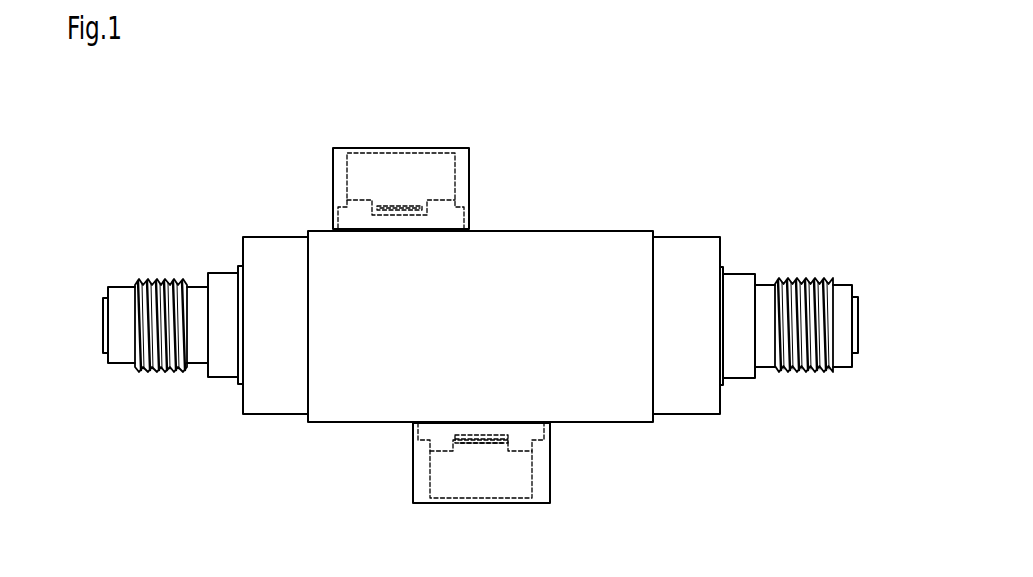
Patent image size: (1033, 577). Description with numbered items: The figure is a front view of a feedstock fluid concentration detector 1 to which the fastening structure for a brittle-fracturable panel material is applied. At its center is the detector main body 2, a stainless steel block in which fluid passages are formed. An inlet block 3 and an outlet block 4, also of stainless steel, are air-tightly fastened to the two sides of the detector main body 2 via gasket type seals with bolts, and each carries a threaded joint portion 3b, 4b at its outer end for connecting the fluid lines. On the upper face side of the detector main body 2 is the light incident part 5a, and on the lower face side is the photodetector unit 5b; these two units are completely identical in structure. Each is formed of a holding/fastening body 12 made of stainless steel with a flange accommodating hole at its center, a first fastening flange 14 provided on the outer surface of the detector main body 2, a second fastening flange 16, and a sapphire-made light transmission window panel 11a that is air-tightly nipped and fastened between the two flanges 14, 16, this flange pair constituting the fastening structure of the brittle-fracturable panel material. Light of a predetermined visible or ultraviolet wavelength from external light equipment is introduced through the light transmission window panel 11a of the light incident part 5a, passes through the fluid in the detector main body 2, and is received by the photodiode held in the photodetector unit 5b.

The feedstock fluid concentration detector 1 is at (696, 168).
The detector main body 2 is at (520, 315).
The inlet block 3 is at (220, 292).
The joint portion 3b is at (148, 280).
The outlet block 4 is at (733, 293).
The joint portion 4b is at (805, 278).
The light incident part 5a is at (408, 147).
The photodetector unit 5b is at (480, 506).
The light transmission window panel 11a is at (386, 206).
The holding/fastening body 12 is at (342, 185).
The first fastening flange 14 is at (365, 220).
The second fastening flange 16 is at (363, 177).